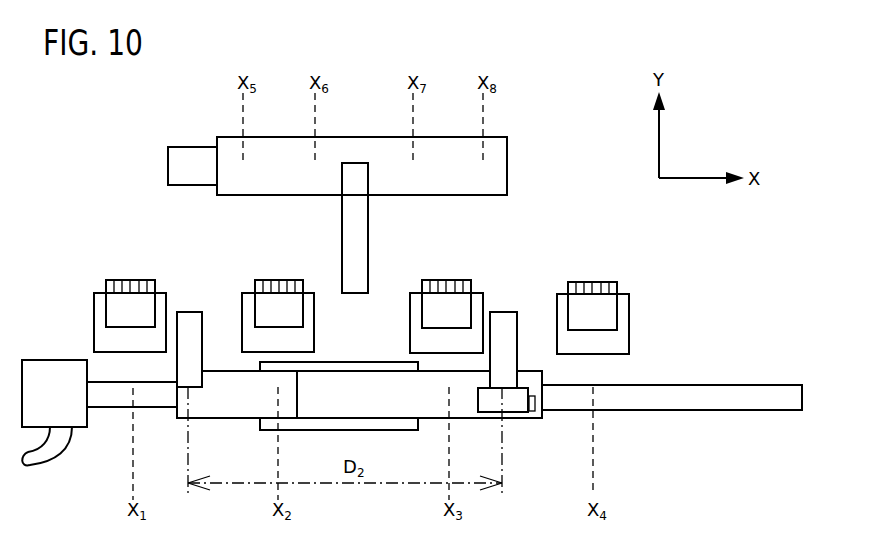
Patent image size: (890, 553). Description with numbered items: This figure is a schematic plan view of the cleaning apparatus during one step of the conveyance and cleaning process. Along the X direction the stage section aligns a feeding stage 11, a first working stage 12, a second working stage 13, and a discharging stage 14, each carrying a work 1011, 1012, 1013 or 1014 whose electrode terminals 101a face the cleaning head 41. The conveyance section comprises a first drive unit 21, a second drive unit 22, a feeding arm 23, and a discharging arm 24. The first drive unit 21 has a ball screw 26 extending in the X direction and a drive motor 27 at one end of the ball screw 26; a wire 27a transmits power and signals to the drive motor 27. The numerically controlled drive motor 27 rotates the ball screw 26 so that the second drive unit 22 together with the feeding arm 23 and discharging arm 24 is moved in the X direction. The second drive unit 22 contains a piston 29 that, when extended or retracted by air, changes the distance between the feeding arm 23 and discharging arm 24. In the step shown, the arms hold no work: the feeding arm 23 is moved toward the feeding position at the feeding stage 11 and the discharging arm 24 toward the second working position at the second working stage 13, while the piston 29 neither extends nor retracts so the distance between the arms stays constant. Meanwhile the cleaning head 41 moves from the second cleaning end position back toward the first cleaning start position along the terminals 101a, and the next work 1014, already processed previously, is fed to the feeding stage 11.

The feeding stage 11 is at (94, 300).
The first working stage 12 is at (242, 302).
The second working stage 13 is at (410, 338).
The discharging stage 14 is at (629, 343).
The work 1011 is at (277, 280).
The work 1012 is at (587, 282).
The work 1013 is at (457, 298).
The next work 1014 is at (128, 280).
The terminals 101a is at (437, 280).
The first drive unit 21 is at (104, 478).
The second drive unit 22 is at (672, 397).
The feeding arm 23 is at (187, 387).
The discharging arm 24 is at (517, 313).
The ball screw 26 is at (97, 407).
The drive motor 27 is at (35, 360).
The wire 27a is at (55, 468).
The piston 29 is at (533, 415).
The cleaning head 41 is at (368, 208).